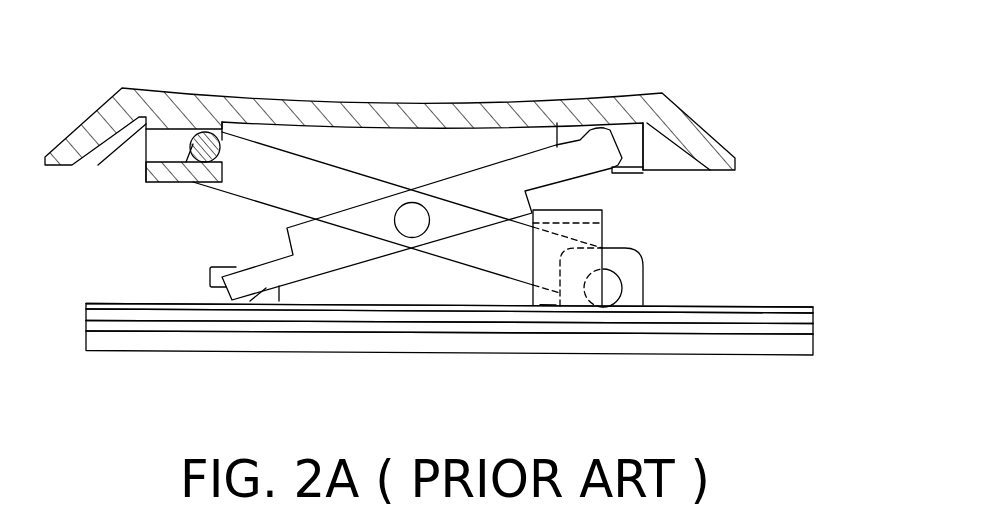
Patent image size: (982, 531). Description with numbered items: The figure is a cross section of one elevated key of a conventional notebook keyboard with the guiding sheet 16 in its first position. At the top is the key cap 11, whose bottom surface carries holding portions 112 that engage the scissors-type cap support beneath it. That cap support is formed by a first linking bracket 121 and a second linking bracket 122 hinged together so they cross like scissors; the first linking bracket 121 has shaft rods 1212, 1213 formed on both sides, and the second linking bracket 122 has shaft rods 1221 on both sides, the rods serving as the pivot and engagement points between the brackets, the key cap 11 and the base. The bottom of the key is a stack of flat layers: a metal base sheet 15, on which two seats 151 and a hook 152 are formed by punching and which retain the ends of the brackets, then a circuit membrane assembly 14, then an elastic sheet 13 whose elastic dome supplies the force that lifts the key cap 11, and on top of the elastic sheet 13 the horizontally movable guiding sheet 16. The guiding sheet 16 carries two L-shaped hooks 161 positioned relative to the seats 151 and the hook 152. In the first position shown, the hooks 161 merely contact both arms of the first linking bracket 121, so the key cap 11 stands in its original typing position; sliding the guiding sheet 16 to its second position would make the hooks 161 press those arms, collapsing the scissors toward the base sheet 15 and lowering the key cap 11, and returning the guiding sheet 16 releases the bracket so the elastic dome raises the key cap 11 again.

The key cap 11 is at (90, 104).
The holding portions 112 is at (632, 163).
The first linking bracket 121 is at (247, 184).
The shaft rod 1213 is at (205, 133).
The shaft rods 1221 is at (412, 215).
The second linking bracket 122 is at (503, 177).
The shaft rod 1212 is at (613, 305).
The seats 151 is at (634, 266).
The hook 152 is at (210, 268).
The L-shaped hooks 161 is at (547, 305).
The elastic sheet 13 is at (693, 319).
The circuit membrane assembly 14 is at (737, 330).
The base sheet 15 is at (782, 341).
The guiding sheet 16 is at (788, 306).